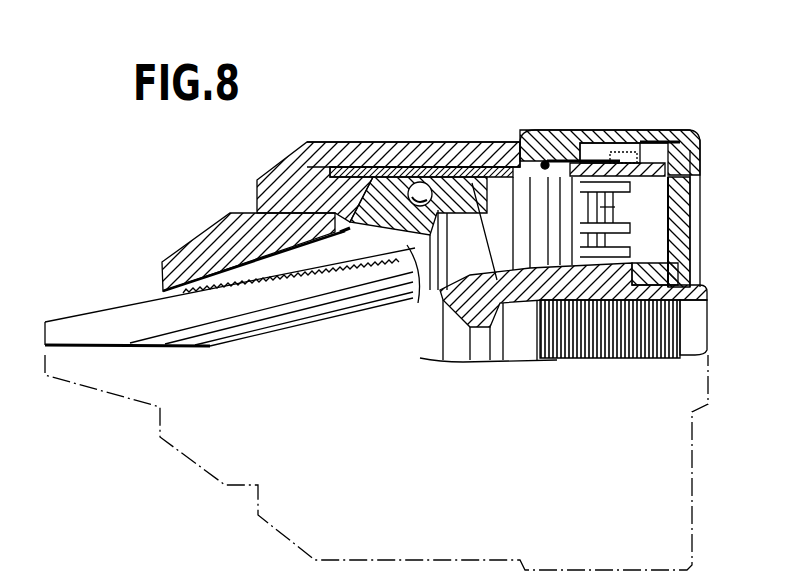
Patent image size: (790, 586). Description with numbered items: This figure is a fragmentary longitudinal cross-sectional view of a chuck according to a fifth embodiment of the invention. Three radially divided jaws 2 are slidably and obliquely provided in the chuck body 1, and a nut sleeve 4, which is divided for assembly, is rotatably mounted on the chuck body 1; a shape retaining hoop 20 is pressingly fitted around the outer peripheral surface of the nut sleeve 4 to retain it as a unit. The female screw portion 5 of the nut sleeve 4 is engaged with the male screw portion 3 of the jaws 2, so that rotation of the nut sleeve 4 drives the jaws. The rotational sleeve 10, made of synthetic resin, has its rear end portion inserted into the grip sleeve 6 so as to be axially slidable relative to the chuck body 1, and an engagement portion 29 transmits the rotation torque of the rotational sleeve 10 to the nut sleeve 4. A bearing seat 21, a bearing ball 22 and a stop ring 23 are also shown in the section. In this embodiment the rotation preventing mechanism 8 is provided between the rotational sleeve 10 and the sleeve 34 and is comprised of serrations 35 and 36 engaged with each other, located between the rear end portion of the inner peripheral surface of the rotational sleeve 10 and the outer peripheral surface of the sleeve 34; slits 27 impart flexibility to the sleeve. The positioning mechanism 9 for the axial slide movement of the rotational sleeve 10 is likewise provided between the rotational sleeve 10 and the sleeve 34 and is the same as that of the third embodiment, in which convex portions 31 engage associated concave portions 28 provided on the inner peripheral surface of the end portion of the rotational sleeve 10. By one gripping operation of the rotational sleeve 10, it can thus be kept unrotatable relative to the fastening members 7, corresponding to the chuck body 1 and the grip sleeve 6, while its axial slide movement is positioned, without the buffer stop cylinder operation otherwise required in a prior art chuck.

The chuck body 1 is at (177, 253).
The jaws 2 is at (93, 318).
The male screw portion 3 is at (187, 285).
The nut sleeve 4 is at (395, 176).
The female screw portion 5 is at (414, 256).
The grip sleeve 6 is at (690, 128).
The fastening members 7 is at (716, 306).
The rotation preventing mechanism 8 is at (642, 137).
The positioning mechanism 9 is at (597, 206).
The rotational sleeve 10 is at (287, 170).
The shape retaining hoop 20 is at (478, 165).
The bearing seat 21 is at (445, 165).
The bearing ball 22 is at (417, 182).
The stop ring 23 is at (514, 160).
The slits 27 is at (622, 188).
The concave portions 28 is at (563, 128).
The engagement portion 29 is at (348, 231).
The convex portions 31 is at (587, 128).
The sleeve 34 is at (693, 148).
The serration 35 is at (663, 128).
The serration 36 is at (613, 128).